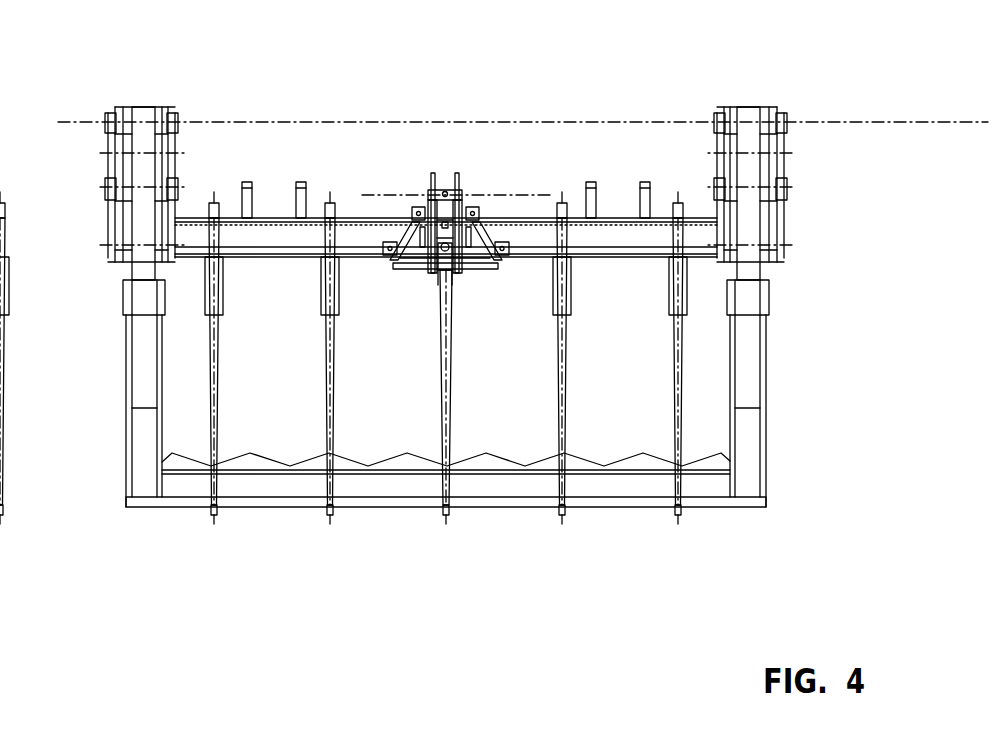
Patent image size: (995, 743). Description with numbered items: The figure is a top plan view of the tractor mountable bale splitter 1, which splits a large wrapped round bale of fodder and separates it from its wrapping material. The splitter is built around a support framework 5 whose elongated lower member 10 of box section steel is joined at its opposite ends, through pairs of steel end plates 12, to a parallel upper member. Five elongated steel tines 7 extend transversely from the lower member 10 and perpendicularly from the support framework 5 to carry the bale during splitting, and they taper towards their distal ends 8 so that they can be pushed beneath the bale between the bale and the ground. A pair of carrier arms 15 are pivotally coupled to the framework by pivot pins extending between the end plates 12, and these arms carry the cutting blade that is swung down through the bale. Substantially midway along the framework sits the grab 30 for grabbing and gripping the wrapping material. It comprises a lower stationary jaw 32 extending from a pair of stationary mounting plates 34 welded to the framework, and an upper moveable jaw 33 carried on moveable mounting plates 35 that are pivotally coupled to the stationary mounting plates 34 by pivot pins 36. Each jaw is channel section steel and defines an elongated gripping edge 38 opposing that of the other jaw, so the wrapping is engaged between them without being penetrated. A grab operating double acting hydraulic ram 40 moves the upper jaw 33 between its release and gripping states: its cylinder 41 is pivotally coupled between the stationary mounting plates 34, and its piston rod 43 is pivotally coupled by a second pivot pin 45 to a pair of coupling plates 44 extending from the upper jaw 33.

The bale splitter 1 is at (641, 86).
The support framework 5 is at (270, 216).
The tines 7 is at (217, 387).
The distal ends 8 is at (218, 513).
The lower member 10 is at (253, 243).
The end plates 12 is at (112, 205).
The carrier arms 15 is at (130, 387).
The grab 30 is at (456, 197).
The lower stationary jaw 32 is at (480, 212).
The upper moveable jaw 33 is at (487, 270).
The stationary mounting plates 34 is at (433, 173).
The moveable mounting plates 35 is at (428, 203).
The pivot pins 36 is at (471, 205).
The gripping edge 38 is at (503, 260).
The grab operating double acting hydraulic ram 40 is at (428, 192).
The cylinder 41 is at (396, 228).
The piston rod 43 is at (421, 262).
The coupling plates 44 is at (421, 272).
The second pivot pin 45 is at (438, 297).